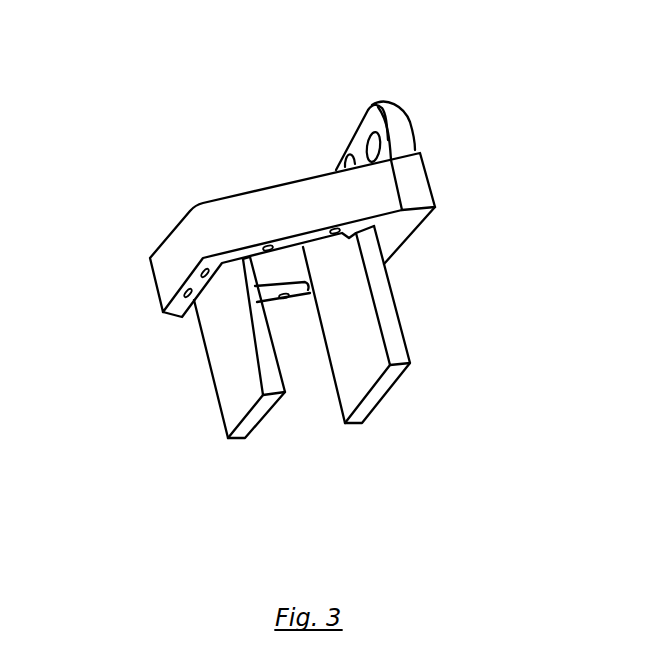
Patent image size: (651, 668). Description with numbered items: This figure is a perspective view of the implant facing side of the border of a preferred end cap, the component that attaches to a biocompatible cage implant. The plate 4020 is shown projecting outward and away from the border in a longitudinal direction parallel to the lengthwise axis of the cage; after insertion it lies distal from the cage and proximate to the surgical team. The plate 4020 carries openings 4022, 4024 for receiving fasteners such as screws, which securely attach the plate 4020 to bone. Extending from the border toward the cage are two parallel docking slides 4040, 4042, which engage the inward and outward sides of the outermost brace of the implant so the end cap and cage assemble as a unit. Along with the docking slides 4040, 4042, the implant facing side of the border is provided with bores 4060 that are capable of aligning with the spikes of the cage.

The plate 4020 is at (349, 120).
The opening 4022 is at (385, 136).
The opening 4024 is at (337, 161).
The docking slide 4040 is at (268, 421).
The docking slide 4042 is at (412, 334).
The bores 4060 is at (322, 229).